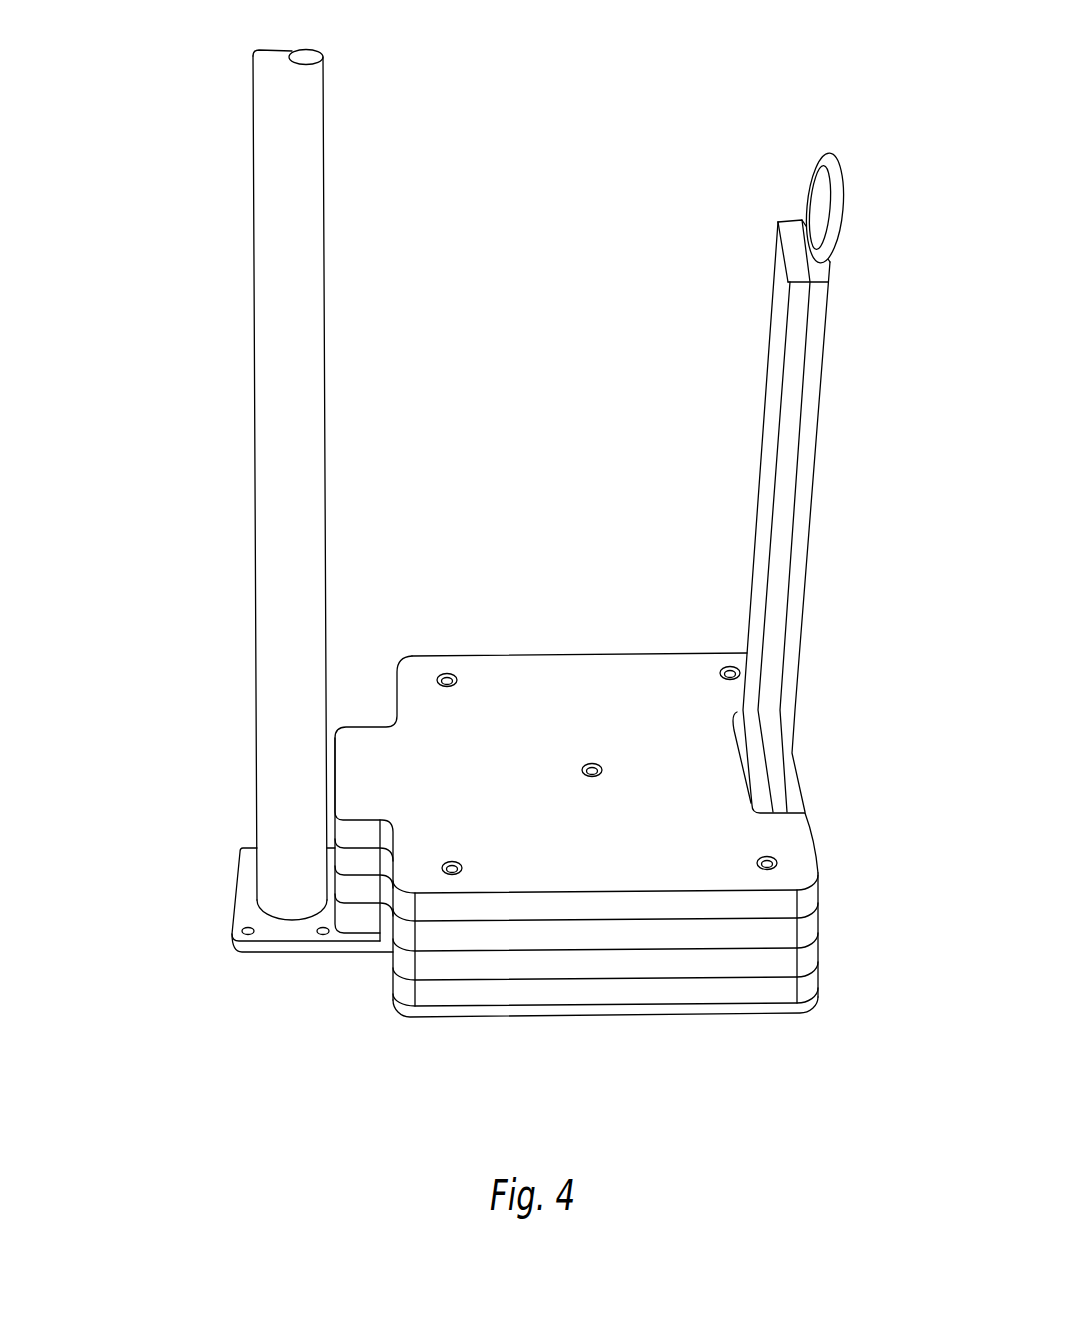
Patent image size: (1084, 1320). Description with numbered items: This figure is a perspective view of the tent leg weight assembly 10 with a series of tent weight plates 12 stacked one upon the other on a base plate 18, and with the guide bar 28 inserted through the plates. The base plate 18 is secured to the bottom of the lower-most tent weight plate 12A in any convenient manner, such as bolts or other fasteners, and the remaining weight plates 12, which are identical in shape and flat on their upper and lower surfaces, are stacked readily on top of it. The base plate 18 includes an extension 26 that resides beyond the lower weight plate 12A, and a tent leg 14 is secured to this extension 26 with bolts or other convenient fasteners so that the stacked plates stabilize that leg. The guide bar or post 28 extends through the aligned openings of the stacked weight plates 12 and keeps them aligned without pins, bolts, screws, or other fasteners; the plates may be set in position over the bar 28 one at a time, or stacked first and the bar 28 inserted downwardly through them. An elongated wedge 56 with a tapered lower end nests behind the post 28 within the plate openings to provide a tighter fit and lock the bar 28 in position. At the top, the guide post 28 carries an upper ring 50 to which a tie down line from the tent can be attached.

The tent leg weight assembly 10 is at (182, 741).
The tent weight plate 12 is at (808, 899).
The lower-most tent weight plate 12A is at (812, 985).
The tent leg 14 is at (255, 302).
The base plate 18 is at (432, 1017).
The base plate extension 26 is at (245, 906).
The guide bar 28 is at (820, 383).
The upper ring 50 is at (815, 157).
The elongated wedge 56 is at (768, 388).